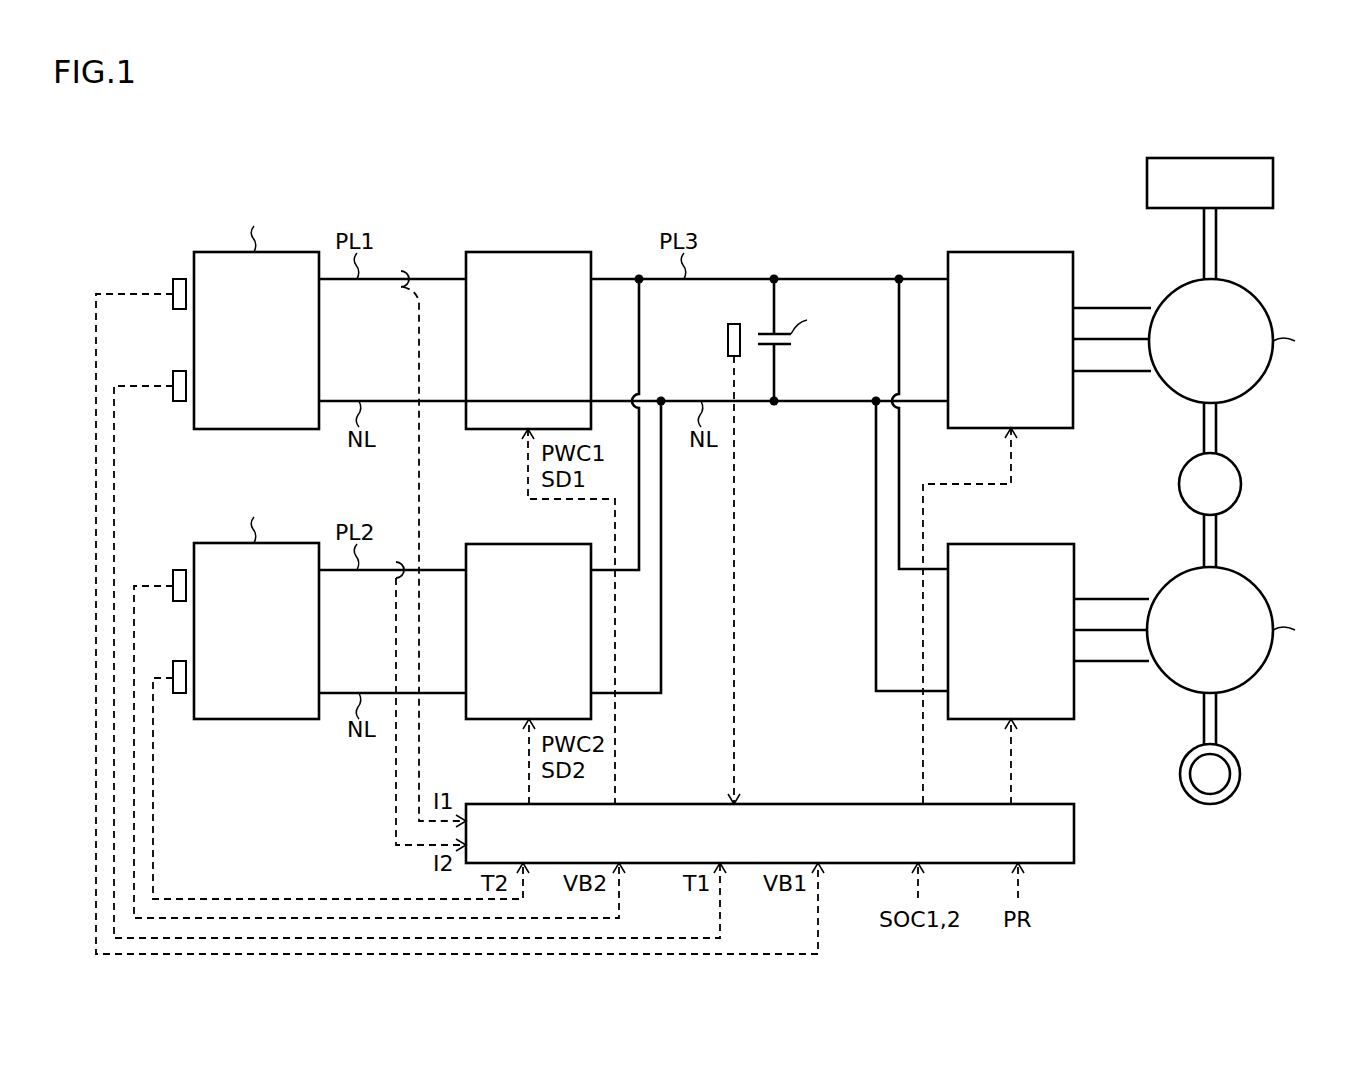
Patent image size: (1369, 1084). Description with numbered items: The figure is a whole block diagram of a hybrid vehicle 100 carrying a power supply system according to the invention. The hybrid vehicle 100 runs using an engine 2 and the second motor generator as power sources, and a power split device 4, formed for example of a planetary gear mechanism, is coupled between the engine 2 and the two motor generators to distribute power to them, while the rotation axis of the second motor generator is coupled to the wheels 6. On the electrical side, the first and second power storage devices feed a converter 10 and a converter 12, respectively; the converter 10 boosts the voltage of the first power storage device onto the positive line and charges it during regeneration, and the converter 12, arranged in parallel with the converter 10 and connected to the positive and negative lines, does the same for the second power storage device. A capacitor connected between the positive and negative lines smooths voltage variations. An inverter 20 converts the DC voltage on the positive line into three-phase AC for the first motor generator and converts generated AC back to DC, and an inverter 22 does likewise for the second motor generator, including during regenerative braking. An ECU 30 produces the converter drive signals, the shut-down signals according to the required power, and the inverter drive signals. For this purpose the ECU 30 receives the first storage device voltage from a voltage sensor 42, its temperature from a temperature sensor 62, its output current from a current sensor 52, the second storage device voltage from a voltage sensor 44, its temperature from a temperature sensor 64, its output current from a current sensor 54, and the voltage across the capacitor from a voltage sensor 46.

The hybrid vehicle 100 is at (99, 133).
The engine 2 is at (1272, 181).
The power split device 4 is at (1240, 483).
The wheels 6 is at (1239, 773).
The converter 10 is at (527, 251).
The converter 12 is at (495, 543).
The inverter 20 is at (1010, 251).
The inverter 22 is at (1045, 543).
The ECU 30 is at (1073, 833).
The voltage sensor 42 is at (178, 278).
The voltage sensor 44 is at (178, 569).
The voltage sensor 46 is at (727, 337).
The current sensor 52 is at (400, 268).
The current sensor 54 is at (395, 559).
The temperature sensor 62 is at (178, 400).
The temperature sensor 64 is at (178, 692).